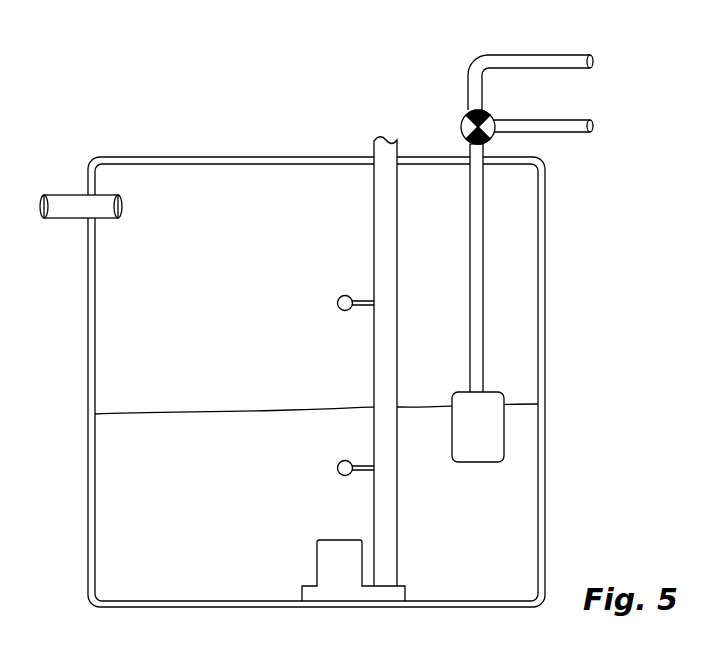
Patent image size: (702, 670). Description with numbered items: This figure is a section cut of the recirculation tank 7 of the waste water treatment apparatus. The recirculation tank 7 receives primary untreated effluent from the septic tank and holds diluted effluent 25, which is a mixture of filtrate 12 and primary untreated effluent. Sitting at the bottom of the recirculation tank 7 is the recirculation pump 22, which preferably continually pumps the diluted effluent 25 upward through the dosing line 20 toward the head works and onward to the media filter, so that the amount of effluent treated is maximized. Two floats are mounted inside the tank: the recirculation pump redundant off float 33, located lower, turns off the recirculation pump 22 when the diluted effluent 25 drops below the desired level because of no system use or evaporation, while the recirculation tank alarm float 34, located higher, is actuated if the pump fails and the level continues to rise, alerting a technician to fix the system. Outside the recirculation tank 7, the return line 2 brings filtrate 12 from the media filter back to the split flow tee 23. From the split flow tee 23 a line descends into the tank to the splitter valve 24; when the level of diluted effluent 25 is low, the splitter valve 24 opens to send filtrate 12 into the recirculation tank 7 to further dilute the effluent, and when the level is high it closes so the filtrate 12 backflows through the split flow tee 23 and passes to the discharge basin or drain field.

The return line 2 is at (590, 61).
The recirculation tank 7 is at (140, 325).
The filtrate 12 is at (592, 128).
The dosing line 20 is at (376, 141).
The recirculation pump 22 is at (333, 594).
The split flow tee 23 is at (461, 118).
The splitter valve 24 is at (490, 437).
The diluted effluent 25 is at (510, 513).
The recirculation pump redundant off float 33 is at (337, 467).
The recirculation tank alarm float 34 is at (337, 303).